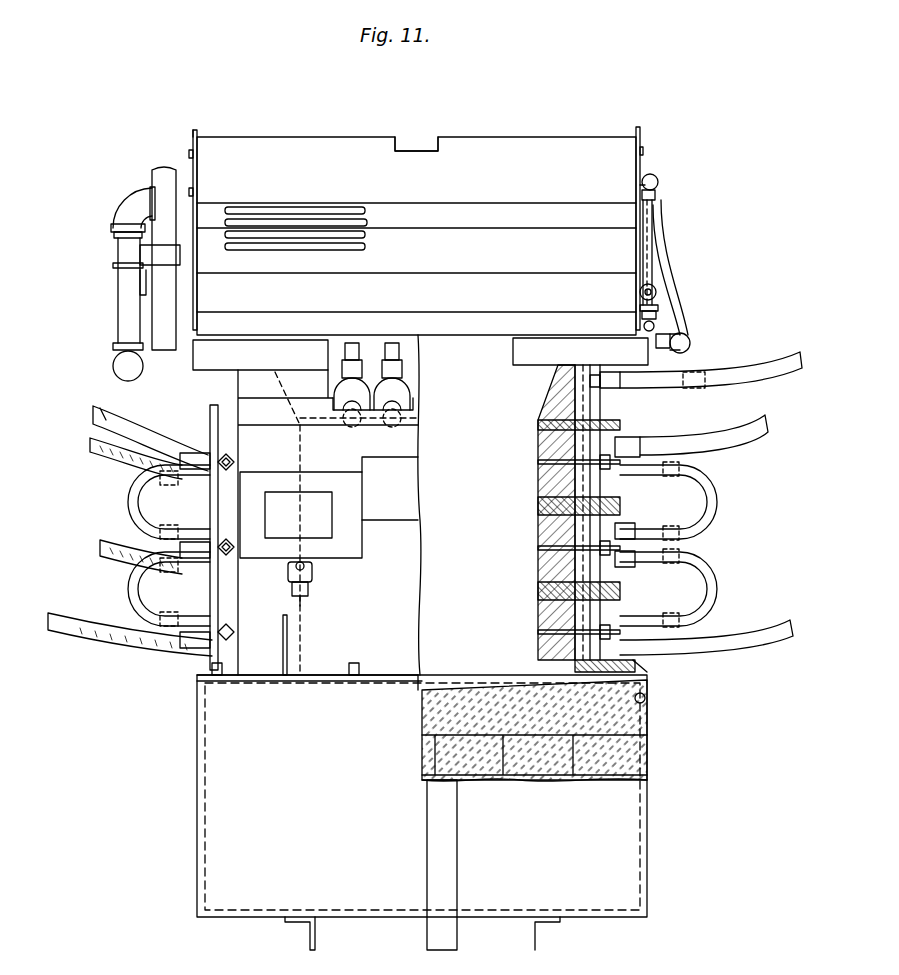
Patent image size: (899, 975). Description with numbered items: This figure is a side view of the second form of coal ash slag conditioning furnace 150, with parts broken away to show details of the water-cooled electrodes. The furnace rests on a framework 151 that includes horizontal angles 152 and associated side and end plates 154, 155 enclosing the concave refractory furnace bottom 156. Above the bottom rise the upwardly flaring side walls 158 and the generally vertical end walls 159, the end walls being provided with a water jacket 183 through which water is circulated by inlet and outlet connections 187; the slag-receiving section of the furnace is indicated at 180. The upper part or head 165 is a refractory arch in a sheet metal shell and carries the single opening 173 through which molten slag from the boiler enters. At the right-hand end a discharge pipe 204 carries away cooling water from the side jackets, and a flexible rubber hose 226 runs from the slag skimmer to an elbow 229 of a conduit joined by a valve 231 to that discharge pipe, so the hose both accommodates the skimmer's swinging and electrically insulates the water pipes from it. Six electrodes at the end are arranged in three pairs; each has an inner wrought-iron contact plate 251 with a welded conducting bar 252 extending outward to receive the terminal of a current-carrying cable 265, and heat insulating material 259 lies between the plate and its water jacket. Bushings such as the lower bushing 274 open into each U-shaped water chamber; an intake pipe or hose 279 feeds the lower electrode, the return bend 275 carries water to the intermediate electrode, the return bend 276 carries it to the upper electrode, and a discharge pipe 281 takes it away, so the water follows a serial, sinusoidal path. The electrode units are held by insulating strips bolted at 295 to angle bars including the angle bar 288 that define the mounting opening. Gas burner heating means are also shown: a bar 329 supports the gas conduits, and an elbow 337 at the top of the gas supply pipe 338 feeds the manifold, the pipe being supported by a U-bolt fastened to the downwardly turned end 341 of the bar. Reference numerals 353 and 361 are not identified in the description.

The coal ash slag conditioning furnace 150 is at (206, 122).
The furnace head 165 is at (518, 118).
The opening 173 is at (432, 148).
The heating tubes 353 is at (290, 247).
The supply pipe 361 is at (160, 183).
The elbow 337 is at (130, 205).
The bar 329 is at (142, 255).
The downwardly turned end 341 is at (140, 290).
The gas supply pipe 338 is at (124, 325).
The elbow 229 is at (658, 185).
The valve 231 is at (656, 290).
The flexible hose 226 is at (674, 305).
The discharge pipe 204 is at (656, 326).
The inlet and outlet connections 187 is at (762, 352).
The end walls 159 is at (222, 407).
The discharge pipe 281 is at (112, 426).
The angle bar 288 is at (210, 430).
The current-carrying cable 265 is at (100, 445).
The bolts 295 is at (235, 462).
The return bend 276 is at (130, 510).
The pipe or hose 279 is at (70, 635).
The water jacket 183 is at (575, 390).
The inner metallic contact plate 251 is at (550, 438).
The conducting bar 252 is at (540, 462).
The furnace section 180 is at (465, 495).
The side walls 158 is at (402, 576).
The return bend 275 is at (690, 472).
The bushing 274 is at (642, 568).
The furnace bottom 156 is at (449, 675).
The heat insulating material 259 is at (545, 654).
The horizontal angles 152 is at (646, 698).
The end plates 155 is at (648, 740).
The side plates 154 is at (225, 828).
The framework 151 is at (186, 701).